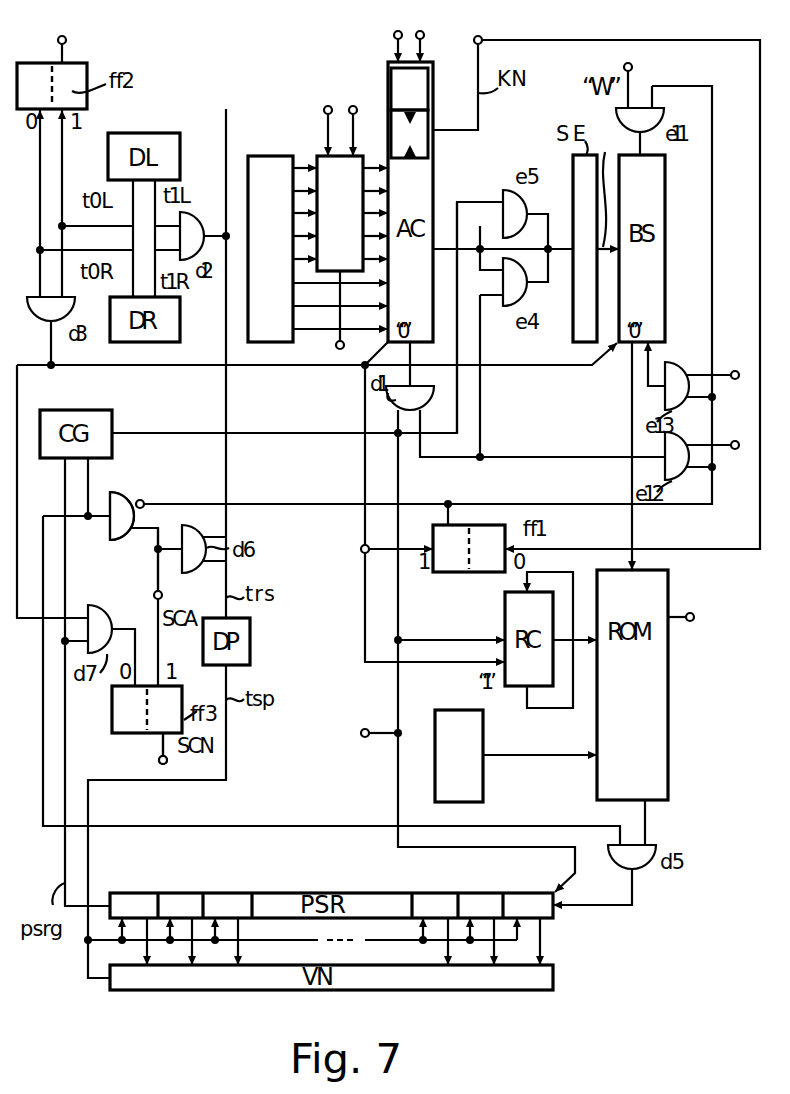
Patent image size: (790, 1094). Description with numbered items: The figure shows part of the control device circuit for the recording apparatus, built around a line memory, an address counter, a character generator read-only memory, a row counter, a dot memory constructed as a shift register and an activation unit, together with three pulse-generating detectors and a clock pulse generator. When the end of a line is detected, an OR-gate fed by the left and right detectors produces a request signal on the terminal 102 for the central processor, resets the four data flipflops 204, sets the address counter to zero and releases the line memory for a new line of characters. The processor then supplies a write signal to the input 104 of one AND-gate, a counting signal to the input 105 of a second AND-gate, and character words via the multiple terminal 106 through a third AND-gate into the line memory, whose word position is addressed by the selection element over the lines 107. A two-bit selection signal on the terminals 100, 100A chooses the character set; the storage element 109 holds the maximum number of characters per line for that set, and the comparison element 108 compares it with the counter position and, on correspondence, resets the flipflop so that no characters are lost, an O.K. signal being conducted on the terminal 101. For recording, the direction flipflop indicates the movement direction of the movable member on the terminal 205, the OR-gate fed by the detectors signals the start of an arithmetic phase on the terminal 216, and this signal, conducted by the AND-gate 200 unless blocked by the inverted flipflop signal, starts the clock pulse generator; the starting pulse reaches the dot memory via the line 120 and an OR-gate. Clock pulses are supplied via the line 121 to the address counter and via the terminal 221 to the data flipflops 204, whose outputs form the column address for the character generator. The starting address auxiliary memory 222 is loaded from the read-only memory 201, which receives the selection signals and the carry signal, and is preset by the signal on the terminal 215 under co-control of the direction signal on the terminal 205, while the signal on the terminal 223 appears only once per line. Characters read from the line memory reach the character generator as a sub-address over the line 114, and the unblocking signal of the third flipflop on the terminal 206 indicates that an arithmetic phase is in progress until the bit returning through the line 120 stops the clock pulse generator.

The terminal 205 is at (358, 95).
The terminal 223 is at (332, 94).
The terminal 100 is at (395, 33).
The terminal 100A is at (428, 24).
The terminal 101 is at (481, 37).
The storage element 109 is at (415, 88).
The comparison element 108 is at (418, 140).
The read-only memory 201 is at (260, 176).
The starting address auxiliary memory 222 is at (330, 170).
The terminal 215 is at (337, 348).
The input 104 is at (631, 70).
The lines 107 is at (607, 188).
The multiple terminal 106 is at (737, 371).
The input 105 is at (737, 441).
The line 114 is at (634, 537).
The line 121 is at (308, 432).
The terminal 102 is at (379, 551).
The AND-gate 200 is at (118, 541).
The terminal 216 is at (162, 594).
The terminal 206 is at (159, 759).
The terminal 221 is at (361, 732).
The data flipflops 204 is at (483, 773).
The line 120 is at (218, 827).